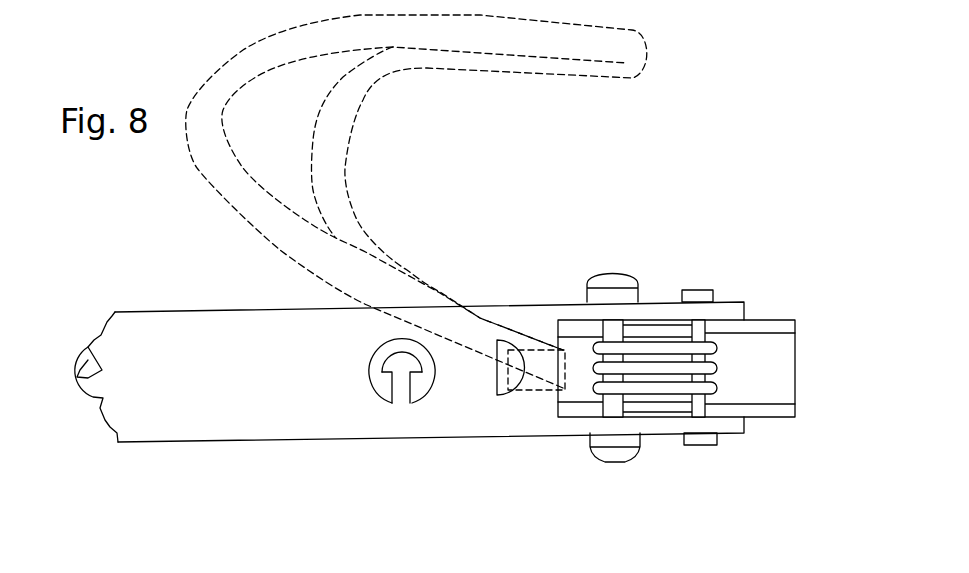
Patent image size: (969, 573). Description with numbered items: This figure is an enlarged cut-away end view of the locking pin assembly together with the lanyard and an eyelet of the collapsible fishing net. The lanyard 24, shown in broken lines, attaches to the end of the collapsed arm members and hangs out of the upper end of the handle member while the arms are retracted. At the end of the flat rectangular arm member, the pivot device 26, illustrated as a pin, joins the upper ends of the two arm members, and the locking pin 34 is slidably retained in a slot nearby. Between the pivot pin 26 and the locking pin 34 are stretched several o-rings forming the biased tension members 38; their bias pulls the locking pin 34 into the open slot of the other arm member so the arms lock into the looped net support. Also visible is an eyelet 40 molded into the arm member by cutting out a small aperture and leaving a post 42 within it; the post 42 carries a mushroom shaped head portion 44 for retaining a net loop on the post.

The lanyard 24 is at (630, 52).
The first pivot device 26 is at (700, 291).
The locking pin 34 is at (620, 462).
The biased tension members 38 is at (717, 348).
The eyelet 40 is at (417, 387).
The post 42 is at (398, 383).
The mushroom shaped head portion 44 is at (396, 362).